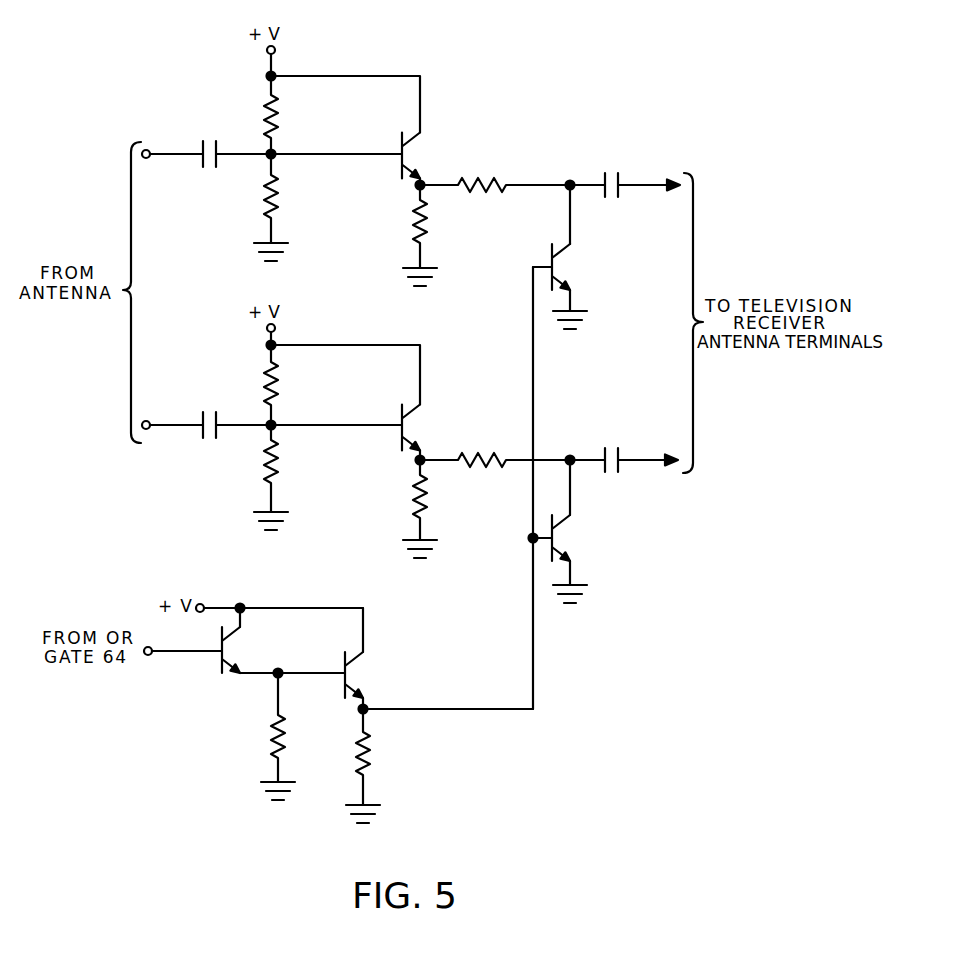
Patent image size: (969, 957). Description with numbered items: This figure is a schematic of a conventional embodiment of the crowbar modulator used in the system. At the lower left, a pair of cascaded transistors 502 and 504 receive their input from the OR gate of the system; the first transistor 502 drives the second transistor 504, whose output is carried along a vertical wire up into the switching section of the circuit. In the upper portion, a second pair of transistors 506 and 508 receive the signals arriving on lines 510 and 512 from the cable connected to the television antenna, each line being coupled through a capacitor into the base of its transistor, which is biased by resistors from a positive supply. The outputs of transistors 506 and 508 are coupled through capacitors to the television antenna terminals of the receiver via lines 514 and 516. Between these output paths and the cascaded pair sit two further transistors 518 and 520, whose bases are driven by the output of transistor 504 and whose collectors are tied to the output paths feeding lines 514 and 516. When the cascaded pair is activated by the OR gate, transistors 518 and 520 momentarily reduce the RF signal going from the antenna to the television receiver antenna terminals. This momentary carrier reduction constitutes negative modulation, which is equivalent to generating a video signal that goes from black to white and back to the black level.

The cascaded transistor 502 is at (229, 638).
The transistor 504 is at (352, 669).
The transistor 506 is at (400, 148).
The transistor 508 is at (400, 420).
The line 510 is at (199, 152).
The line 512 is at (200, 423).
The line 514 is at (663, 183).
The line 516 is at (666, 457).
The switching transistor 518 is at (549, 262).
The switching transistor 520 is at (558, 536).